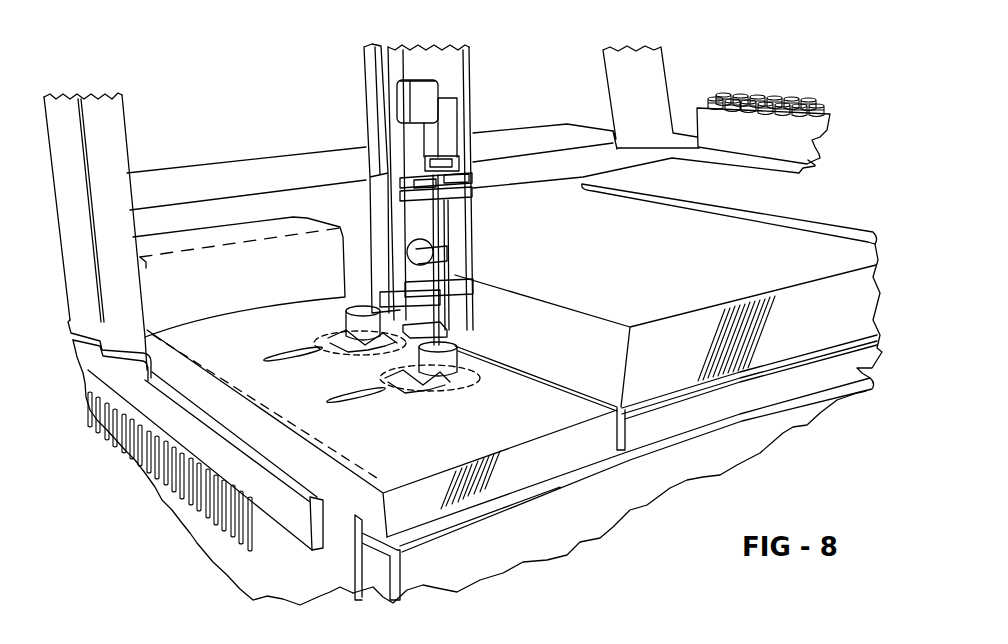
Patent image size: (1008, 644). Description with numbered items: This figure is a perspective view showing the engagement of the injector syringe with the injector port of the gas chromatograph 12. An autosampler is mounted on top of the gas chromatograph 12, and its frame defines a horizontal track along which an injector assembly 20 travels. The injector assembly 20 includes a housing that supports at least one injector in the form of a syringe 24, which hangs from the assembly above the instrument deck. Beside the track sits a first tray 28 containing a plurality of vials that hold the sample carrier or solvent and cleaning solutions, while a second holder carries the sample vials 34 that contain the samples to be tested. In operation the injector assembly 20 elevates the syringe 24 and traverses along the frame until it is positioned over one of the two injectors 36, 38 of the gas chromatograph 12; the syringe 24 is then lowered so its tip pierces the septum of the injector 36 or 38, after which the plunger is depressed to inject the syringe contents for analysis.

The gas chromatograph 12 is at (505, 457).
The injector assembly 20 is at (425, 79).
The syringe 24 is at (400, 296).
The first tray 28 is at (813, 145).
The sample vials 34 is at (787, 94).
The injector 36 is at (380, 328).
The injector 38 is at (447, 372).